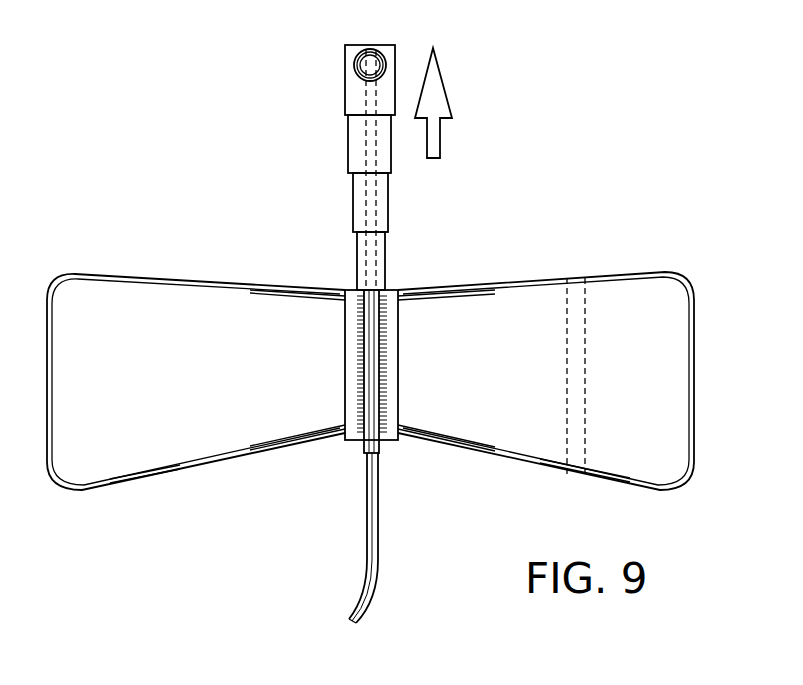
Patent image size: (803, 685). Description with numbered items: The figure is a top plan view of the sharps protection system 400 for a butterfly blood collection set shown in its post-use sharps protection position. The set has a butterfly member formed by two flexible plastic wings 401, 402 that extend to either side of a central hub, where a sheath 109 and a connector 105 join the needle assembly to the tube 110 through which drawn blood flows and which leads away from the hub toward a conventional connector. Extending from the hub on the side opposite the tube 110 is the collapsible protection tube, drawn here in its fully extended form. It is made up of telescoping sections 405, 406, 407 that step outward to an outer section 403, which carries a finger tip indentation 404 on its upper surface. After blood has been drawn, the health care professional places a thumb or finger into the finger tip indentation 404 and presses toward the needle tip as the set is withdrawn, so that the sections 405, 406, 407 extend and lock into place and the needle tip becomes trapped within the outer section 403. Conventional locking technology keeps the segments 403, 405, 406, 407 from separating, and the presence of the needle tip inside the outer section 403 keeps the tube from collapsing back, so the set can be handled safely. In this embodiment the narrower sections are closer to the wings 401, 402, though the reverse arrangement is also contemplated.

The sharps protection system 400 is at (406, 334).
The wing 401 is at (660, 294).
The wing 402 is at (101, 300).
The outer section 403 is at (355, 108).
The finger tip indentation 404 is at (357, 76).
The section 405 is at (357, 160).
The section 406 is at (362, 212).
The section 407 is at (367, 265).
The connector 105 is at (352, 421).
The sheath 109 is at (382, 444).
The tube 110 is at (373, 590).